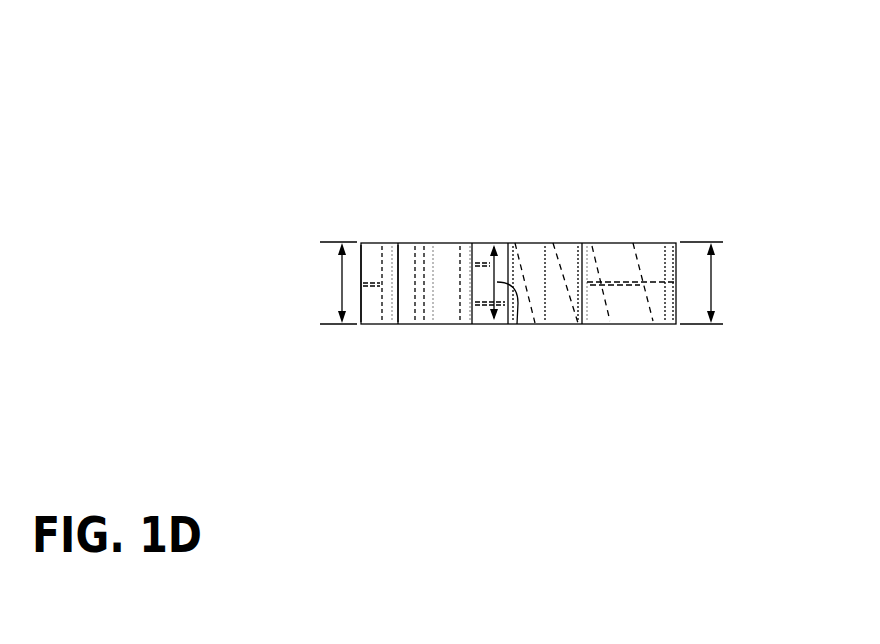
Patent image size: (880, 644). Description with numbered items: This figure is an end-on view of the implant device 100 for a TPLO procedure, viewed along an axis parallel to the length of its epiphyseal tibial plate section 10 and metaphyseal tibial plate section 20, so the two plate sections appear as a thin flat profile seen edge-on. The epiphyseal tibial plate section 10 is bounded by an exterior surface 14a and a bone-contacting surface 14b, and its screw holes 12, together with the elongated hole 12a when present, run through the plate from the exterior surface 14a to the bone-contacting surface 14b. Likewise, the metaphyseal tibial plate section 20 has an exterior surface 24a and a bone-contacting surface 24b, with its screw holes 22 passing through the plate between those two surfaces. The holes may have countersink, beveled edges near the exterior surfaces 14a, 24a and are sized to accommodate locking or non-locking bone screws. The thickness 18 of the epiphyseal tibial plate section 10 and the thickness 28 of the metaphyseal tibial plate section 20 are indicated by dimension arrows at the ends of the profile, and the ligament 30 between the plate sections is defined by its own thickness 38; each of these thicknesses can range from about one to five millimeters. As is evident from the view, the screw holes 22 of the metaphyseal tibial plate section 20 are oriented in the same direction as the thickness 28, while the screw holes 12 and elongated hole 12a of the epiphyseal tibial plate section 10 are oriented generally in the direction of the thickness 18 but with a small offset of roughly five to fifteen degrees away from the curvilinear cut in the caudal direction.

The implant device 100 is at (312, 115).
The epiphyseal tibial plate section 10 is at (664, 243).
The screw holes 12 is at (549, 243).
The elongated screw hole 12a is at (612, 243).
The exterior surface 14a is at (639, 236).
The bone-contacting surface 14b is at (612, 331).
The thickness 18 is at (711, 290).
The metaphyseal tibial plate section 20 is at (370, 243).
The screw holes 22 is at (403, 243).
The exterior surface 24a is at (383, 237).
The bone-contacting surface 24b is at (406, 332).
The thickness 28 is at (342, 286).
The ligament 30 is at (484, 292).
The thickness 38 is at (517, 324).